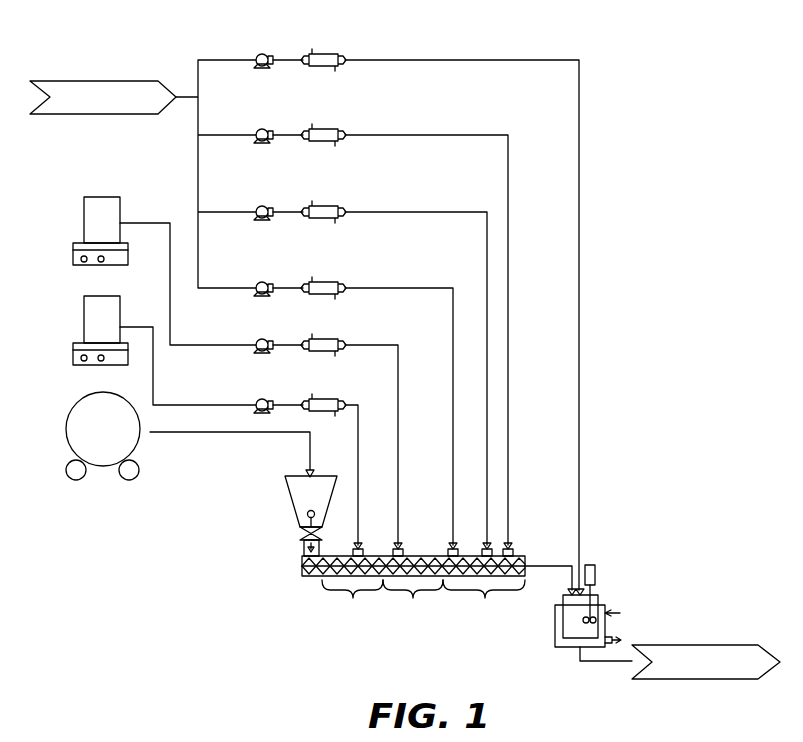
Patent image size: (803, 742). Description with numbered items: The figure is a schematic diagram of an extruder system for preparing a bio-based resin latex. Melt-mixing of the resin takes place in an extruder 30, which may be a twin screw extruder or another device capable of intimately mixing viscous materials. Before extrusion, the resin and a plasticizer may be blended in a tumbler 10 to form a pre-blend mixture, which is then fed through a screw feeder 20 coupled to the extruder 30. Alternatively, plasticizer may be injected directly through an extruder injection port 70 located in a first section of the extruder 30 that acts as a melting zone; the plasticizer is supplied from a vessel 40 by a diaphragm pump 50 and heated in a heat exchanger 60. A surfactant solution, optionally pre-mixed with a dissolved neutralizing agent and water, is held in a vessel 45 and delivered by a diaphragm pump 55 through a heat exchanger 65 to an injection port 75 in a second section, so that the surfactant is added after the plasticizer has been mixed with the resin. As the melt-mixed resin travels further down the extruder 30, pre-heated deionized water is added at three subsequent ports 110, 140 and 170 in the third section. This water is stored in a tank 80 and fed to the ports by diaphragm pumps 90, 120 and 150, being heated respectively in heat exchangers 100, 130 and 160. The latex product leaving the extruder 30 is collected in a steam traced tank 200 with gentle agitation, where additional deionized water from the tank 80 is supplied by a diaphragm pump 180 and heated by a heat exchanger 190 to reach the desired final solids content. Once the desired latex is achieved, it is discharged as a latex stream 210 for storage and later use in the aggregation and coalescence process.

The tumbler 10 is at (101, 467).
The screw feeder 20 is at (307, 515).
The extruder 30 is at (186, 631).
The vessel 40 is at (73, 358).
The vessel 45 is at (73, 258).
The diaphragm pump 50 is at (268, 400).
The diaphragm pump 55 is at (268, 340).
The heat exchanger 60 is at (334, 398).
The heat exchanger 65 is at (334, 338).
The extruder injection port 70 is at (358, 545).
The extruder injection port 75 is at (398, 545).
The tank 80 is at (105, 115).
The diaphragm pump 90 is at (268, 283).
The heat exchanger 100 is at (334, 281).
The injection port 110 is at (453, 545).
The diaphragm pump 120 is at (268, 207).
The heat exchanger 130 is at (334, 205).
The injection port 140 is at (487, 545).
The diaphragm pump 150 is at (268, 130).
The heat exchanger 160 is at (334, 128).
The injection port 170 is at (508, 545).
The diaphragm pump 180 is at (268, 55).
The heat exchanger 190 is at (334, 53).
The steam traced tank 200 is at (598, 597).
The latex stream 210 is at (715, 645).